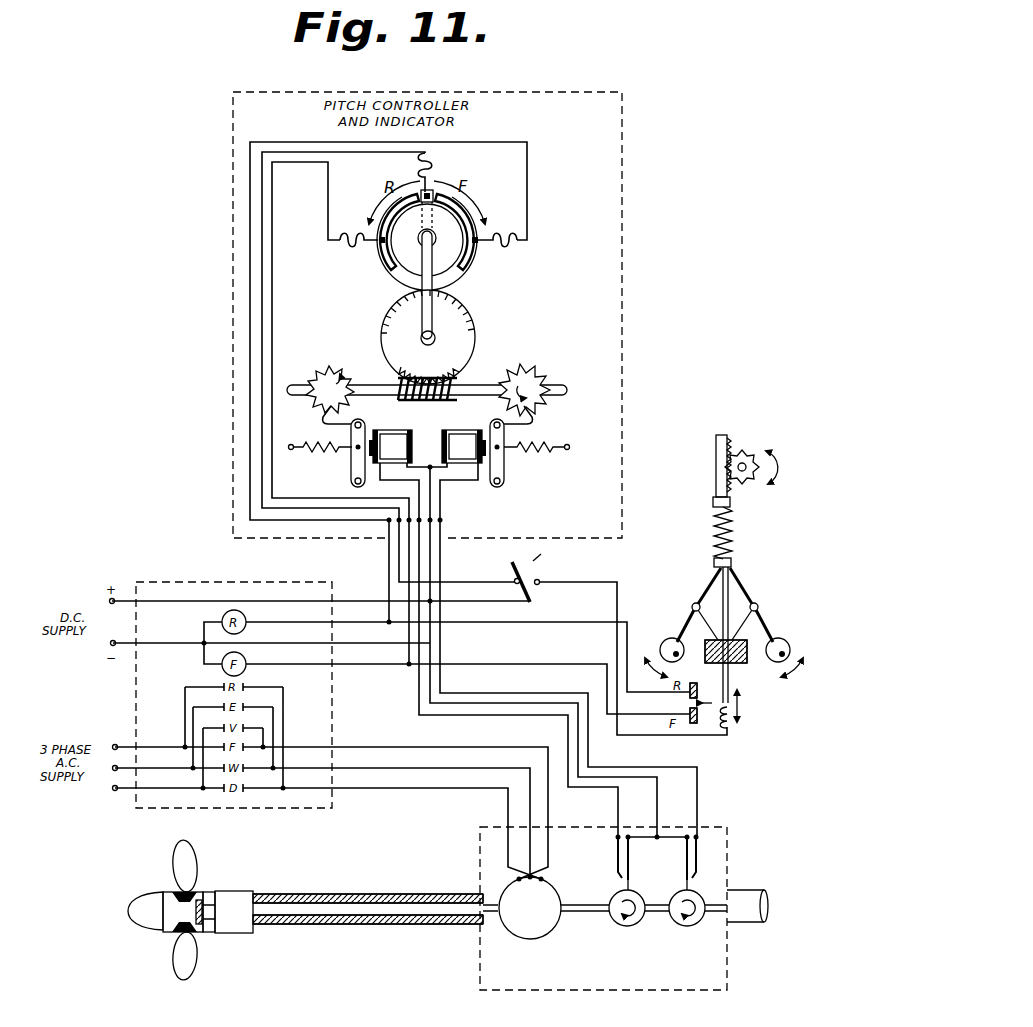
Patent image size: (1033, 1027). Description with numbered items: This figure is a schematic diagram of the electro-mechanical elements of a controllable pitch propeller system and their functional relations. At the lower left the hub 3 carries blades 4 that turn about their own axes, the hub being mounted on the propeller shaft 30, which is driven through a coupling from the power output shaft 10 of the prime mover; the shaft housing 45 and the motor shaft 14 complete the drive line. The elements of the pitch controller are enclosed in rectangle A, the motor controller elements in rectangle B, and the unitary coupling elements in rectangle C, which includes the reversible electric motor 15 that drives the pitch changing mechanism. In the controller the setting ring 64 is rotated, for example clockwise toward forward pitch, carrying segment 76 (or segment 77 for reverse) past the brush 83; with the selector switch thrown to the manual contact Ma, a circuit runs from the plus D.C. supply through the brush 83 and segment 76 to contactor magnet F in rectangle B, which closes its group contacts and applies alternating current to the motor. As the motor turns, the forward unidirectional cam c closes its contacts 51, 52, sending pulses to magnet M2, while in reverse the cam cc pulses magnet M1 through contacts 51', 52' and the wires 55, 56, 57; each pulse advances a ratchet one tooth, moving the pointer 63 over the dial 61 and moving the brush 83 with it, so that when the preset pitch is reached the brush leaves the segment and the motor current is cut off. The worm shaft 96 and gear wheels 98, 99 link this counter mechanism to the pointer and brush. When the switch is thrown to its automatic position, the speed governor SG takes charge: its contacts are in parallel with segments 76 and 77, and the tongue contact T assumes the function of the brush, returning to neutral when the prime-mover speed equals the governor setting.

The hub 3 is at (150, 915).
The blades 4 is at (186, 853).
The power output shaft 10 is at (747, 918).
The motor shaft 14 is at (582, 906).
The reversible electric motor 15 is at (548, 925).
The propeller shaft 30 is at (408, 917).
The shaft housing / tube 45 is at (334, 908).
The cam contact 51 is at (709, 861).
The clutch contact 51' is at (599, 857).
The cam contact 52 is at (671, 861).
The clutch coil lead 52' is at (657, 858).
The control wire 55 is at (663, 766).
The control wire 56 is at (613, 790).
The common wire 57 is at (657, 798).
The indicator dial 61 is at (455, 350).
The pointer 63 is at (422, 322).
The setting ring 64 is at (451, 277).
The segment 76 is at (388, 254).
The segment 77 is at (470, 217).
The brush 83 is at (431, 192).
The worm shaft 96 is at (550, 387).
The gear wheel 98 is at (322, 400).
The gear wheel 99 is at (547, 403).
The magnet M1 is at (389, 438).
The magnet M2 is at (460, 438).
The manual contact Ma is at (513, 570).
The speed governor SG is at (724, 578).
The tongue contact T is at (716, 719).
The unidirectional cam cc is at (625, 926).
The unidirectional cam c is at (688, 926).
The pitch controller rectangle A is at (575, 291).
The motor controller rectangle B is at (316, 721).
The coupling rectangle C is at (549, 973).